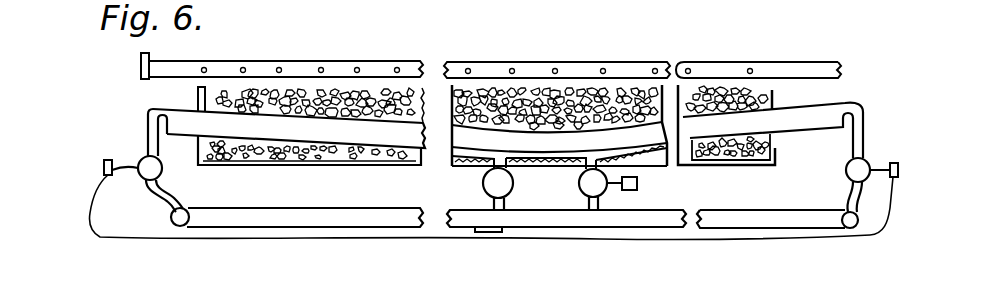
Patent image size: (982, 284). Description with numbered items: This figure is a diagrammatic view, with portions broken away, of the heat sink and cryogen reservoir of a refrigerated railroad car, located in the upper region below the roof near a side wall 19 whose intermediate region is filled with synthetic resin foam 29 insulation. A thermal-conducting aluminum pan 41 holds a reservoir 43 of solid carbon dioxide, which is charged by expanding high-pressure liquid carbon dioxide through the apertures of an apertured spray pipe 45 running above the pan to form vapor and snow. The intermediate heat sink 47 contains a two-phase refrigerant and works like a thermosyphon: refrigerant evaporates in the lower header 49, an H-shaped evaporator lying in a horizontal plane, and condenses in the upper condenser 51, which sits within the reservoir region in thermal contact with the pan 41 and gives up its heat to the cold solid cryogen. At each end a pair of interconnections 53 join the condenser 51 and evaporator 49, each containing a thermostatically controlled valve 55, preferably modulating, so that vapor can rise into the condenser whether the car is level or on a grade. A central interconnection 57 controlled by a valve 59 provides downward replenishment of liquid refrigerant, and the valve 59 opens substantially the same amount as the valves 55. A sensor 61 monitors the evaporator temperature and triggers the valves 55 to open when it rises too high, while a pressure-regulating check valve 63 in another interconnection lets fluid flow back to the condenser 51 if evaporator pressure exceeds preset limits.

The side wall 19 is at (721, 59).
The synthetic resin foam 29 is at (430, 0).
The thermal-conducting metal pan 41 is at (333, 165).
The reservoir of solid CO2 43 is at (228, 164).
The apertured spray pipe 45 is at (793, 68).
The intermediate heat sink 47 is at (880, 97).
The lower header 49 is at (779, 186).
The upper condenser 51 is at (820, 113).
The interconnections 53 is at (146, 133).
The thermostatically controlled valve 55 is at (132, 173).
The central interconnection 57 is at (603, 202).
The valve 59 is at (638, 192).
The sensor 61 is at (490, 233).
The pressure-regulating check valve 63 is at (483, 187).